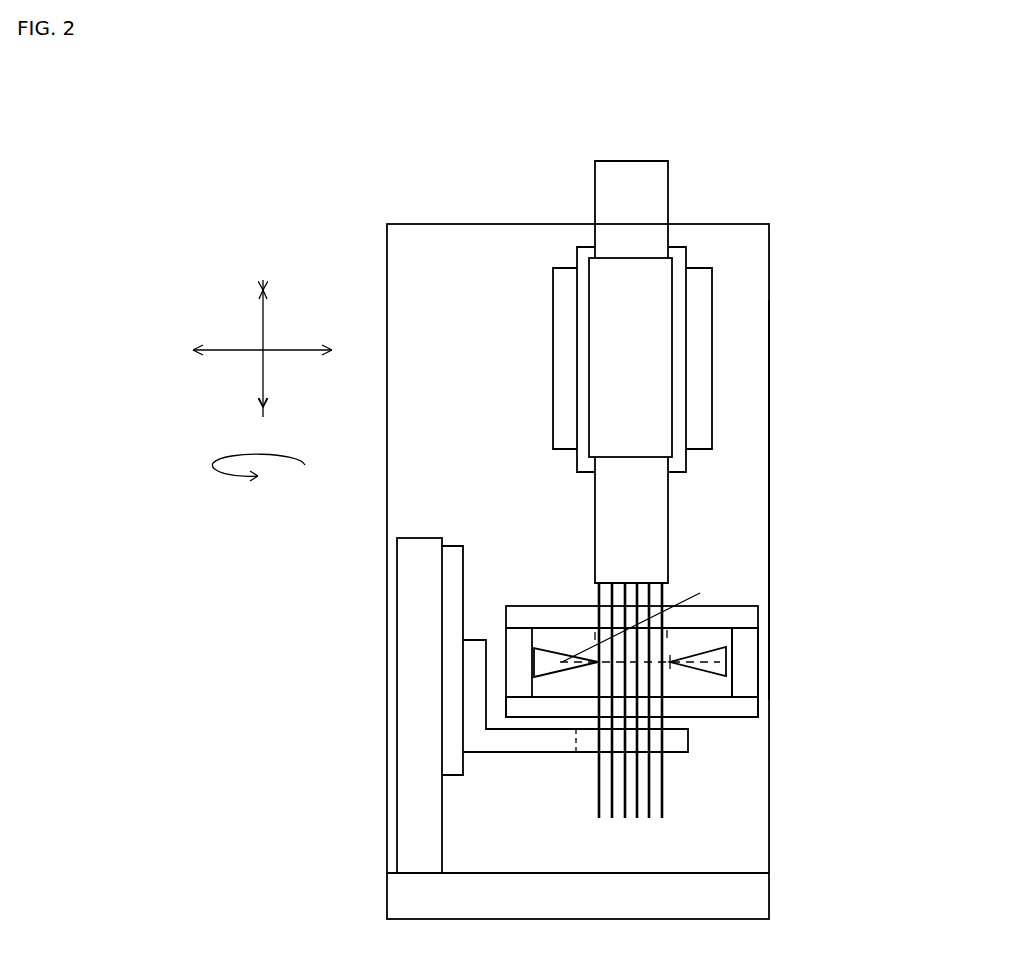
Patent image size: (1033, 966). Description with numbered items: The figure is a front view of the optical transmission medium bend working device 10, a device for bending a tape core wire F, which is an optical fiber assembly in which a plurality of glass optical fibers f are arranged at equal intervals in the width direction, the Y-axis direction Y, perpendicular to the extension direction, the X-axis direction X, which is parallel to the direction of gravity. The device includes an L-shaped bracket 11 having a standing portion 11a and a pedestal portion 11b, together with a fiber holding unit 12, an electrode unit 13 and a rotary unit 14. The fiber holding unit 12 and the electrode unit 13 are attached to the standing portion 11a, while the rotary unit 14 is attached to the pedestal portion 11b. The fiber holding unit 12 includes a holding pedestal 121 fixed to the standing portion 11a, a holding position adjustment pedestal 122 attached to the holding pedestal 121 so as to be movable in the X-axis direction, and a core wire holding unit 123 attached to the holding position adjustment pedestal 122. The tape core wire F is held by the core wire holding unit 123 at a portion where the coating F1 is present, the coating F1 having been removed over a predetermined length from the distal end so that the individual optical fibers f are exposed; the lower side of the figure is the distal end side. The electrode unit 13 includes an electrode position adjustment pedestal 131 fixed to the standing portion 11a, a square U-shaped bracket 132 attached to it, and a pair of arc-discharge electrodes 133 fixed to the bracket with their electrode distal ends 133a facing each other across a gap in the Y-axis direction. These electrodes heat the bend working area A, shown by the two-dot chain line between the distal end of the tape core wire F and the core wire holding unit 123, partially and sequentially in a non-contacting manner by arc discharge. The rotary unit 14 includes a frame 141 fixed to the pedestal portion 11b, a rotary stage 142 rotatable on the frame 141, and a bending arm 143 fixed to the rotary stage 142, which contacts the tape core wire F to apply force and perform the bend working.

The optical transmission medium bend working device 10 is at (438, 190).
The L-shaped bracket 11 is at (747, 850).
The standing portion 11a is at (748, 488).
The pedestal portion 11b is at (408, 902).
The fiber holding unit 12 is at (702, 242).
The holding pedestal 121 is at (703, 358).
The holding position adjustment pedestal 122 is at (680, 293).
The core wire holding unit 123 is at (598, 351).
The tape core wire F is at (585, 193).
The coating F1 is at (610, 493).
The optical fibers f is at (637, 820).
The electrode unit 13 is at (740, 593).
The electrode position adjustment pedestal 131 is at (743, 707).
The square U-shaped bracket 132 is at (747, 650).
The arc-discharge electrodes 133 is at (713, 658).
The electrode distal ends 133a is at (670, 662).
The bend working area A is at (598, 638).
The rotary unit 14 is at (473, 765).
The frame 141 is at (408, 793).
The rotary stage 142 is at (453, 570).
The bending arm 143 is at (522, 736).
The X-axis direction X is at (264, 371).
The Y-axis direction Y is at (275, 348).